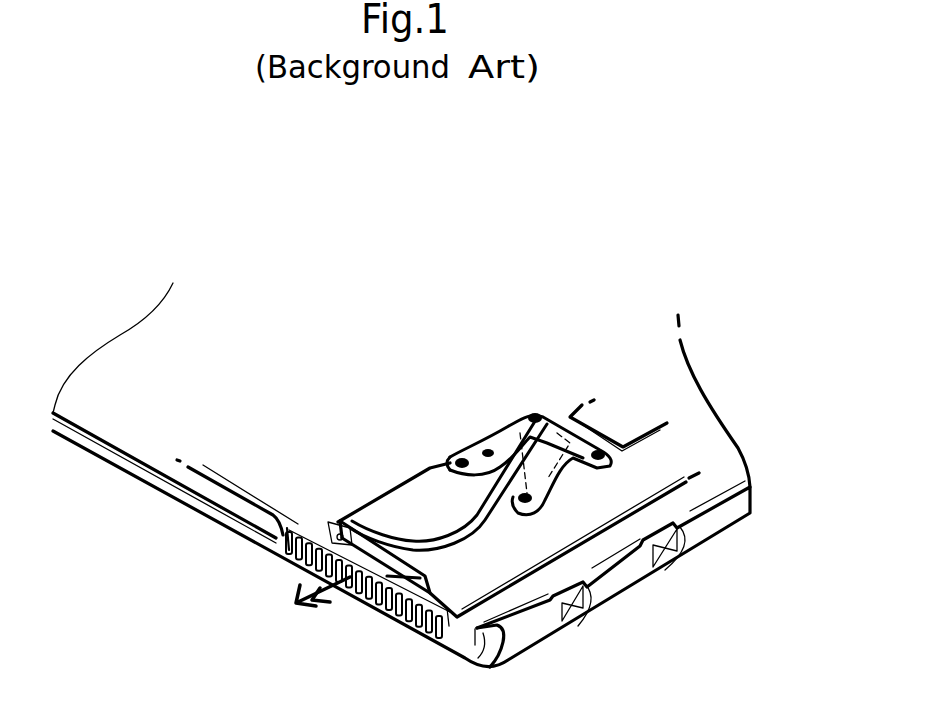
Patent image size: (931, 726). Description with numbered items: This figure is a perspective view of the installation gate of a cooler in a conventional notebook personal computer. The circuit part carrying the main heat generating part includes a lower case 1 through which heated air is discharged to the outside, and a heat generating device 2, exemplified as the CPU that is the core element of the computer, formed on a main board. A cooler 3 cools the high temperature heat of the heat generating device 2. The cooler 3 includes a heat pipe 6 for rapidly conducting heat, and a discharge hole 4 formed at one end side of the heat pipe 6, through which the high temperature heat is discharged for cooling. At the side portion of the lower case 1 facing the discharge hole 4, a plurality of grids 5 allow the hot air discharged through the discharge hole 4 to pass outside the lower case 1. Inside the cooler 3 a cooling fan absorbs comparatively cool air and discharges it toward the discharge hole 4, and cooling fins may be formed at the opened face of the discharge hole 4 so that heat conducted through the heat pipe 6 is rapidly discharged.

The lower case 1 is at (722, 525).
The heat generating device 2 is at (505, 435).
The cooler 3 is at (410, 500).
The discharge hole 4 is at (335, 545).
The slot housing 5 is at (383, 605).
The heat pipe 6 is at (500, 508).